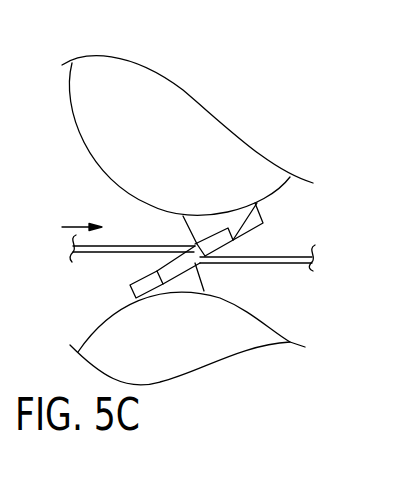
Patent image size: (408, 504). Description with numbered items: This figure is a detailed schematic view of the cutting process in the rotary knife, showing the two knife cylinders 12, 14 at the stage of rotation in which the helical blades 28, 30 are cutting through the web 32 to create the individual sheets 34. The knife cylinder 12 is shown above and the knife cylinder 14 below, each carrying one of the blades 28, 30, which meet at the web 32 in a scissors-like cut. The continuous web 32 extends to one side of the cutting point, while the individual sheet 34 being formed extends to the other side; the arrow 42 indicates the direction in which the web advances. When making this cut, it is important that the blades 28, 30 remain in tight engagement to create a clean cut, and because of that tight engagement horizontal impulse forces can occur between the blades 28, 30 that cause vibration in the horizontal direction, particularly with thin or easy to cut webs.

The knife cylinder 12 is at (177, 104).
The knife cylinder 14 is at (187, 354).
The helical blade 28 is at (257, 212).
The helical blade 30 is at (129, 289).
The web 32 is at (90, 253).
The individual sheet 34 is at (292, 265).
The direction of movement arrow 42 is at (77, 226).